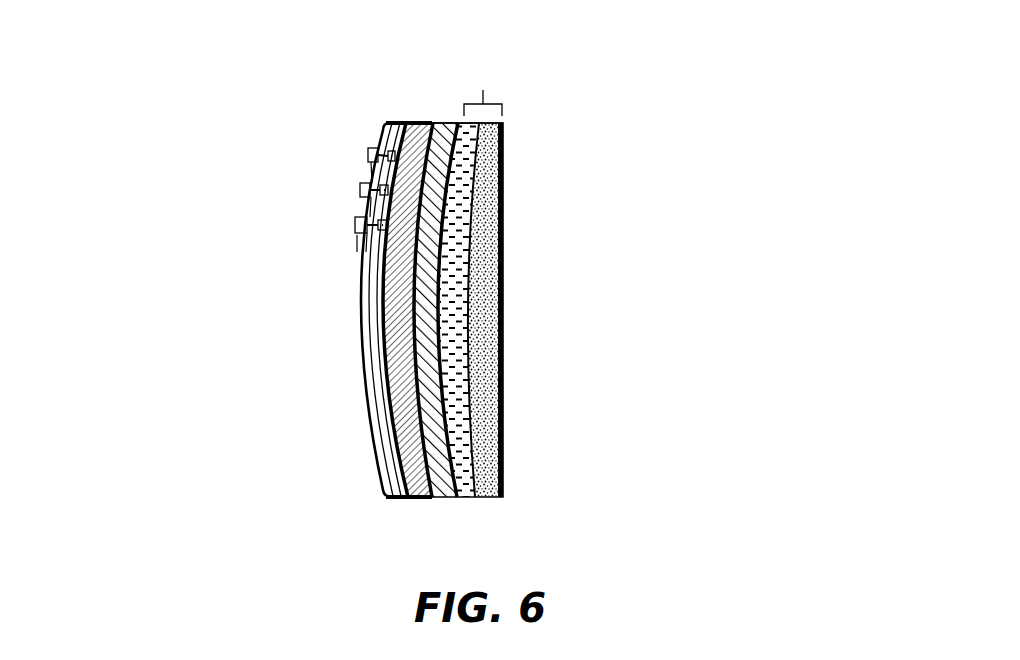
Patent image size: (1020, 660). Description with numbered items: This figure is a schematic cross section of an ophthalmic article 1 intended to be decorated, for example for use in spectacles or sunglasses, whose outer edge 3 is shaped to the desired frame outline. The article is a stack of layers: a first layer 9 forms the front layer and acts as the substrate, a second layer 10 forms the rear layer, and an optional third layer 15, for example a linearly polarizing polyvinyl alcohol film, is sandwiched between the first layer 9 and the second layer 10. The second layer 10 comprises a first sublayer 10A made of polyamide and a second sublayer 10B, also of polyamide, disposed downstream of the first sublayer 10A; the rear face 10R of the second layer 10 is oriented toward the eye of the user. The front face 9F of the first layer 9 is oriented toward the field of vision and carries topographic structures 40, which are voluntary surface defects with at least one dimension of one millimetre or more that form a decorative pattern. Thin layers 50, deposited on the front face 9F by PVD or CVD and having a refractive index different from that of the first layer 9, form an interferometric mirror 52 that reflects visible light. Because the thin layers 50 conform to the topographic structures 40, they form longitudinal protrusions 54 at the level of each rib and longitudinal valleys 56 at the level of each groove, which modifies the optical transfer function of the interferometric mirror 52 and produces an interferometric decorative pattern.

The ophthalmic article 1 is at (596, 122).
The outer edge 3 is at (513, 116).
The first layer 9 is at (417, 122).
The front face 9F is at (392, 443).
The second layer 10 is at (536, 317).
The first sublayer 10A is at (468, 498).
The second sublayer 10B is at (488, 500).
The rear face 10R is at (504, 252).
The third layer 15 is at (461, 500).
The topographic structures 40 is at (371, 149).
The thin layers 50 is at (346, 270).
The interferometric mirror 52 is at (361, 351).
The longitudinal protrusions 54 is at (372, 157).
The longitudinal valleys 56 is at (380, 170).